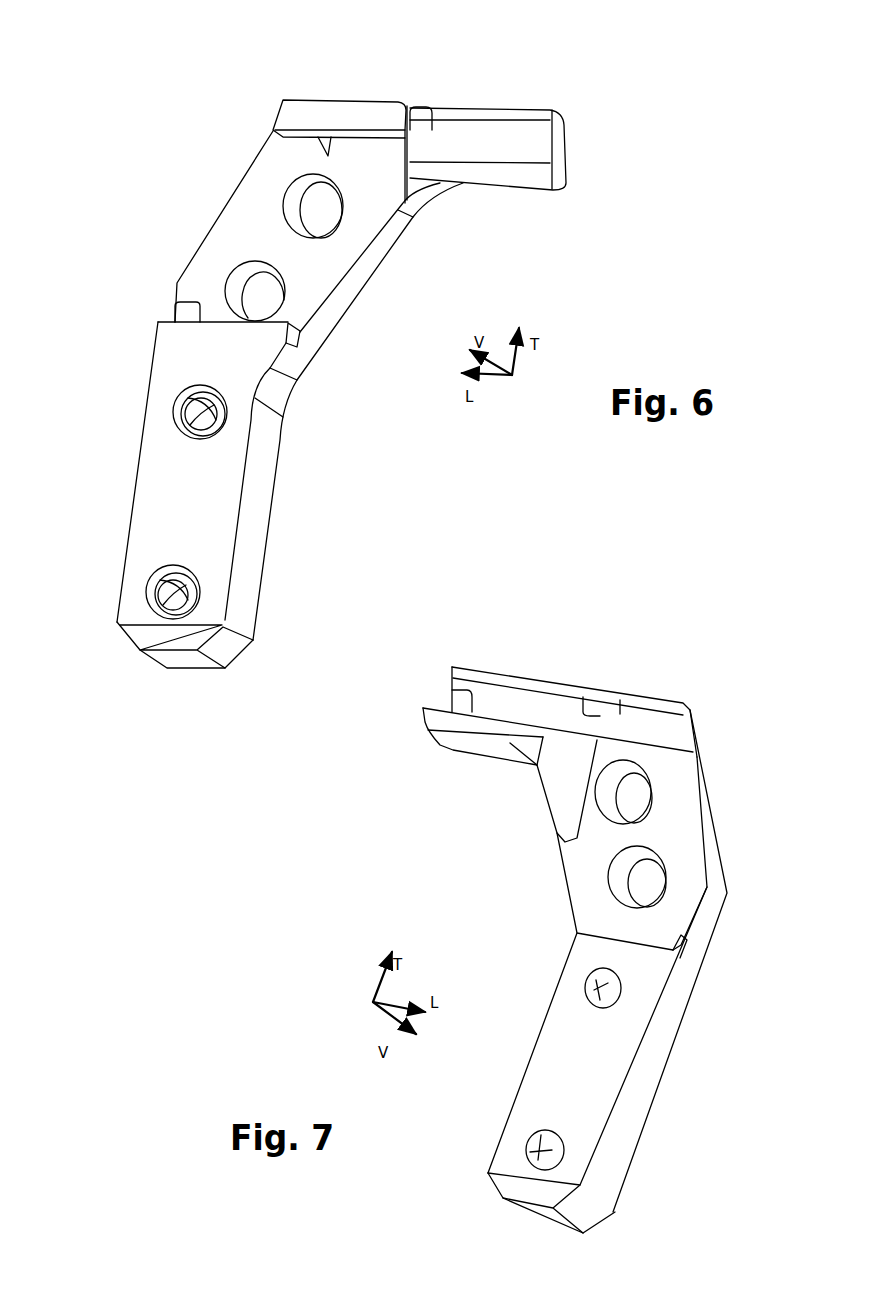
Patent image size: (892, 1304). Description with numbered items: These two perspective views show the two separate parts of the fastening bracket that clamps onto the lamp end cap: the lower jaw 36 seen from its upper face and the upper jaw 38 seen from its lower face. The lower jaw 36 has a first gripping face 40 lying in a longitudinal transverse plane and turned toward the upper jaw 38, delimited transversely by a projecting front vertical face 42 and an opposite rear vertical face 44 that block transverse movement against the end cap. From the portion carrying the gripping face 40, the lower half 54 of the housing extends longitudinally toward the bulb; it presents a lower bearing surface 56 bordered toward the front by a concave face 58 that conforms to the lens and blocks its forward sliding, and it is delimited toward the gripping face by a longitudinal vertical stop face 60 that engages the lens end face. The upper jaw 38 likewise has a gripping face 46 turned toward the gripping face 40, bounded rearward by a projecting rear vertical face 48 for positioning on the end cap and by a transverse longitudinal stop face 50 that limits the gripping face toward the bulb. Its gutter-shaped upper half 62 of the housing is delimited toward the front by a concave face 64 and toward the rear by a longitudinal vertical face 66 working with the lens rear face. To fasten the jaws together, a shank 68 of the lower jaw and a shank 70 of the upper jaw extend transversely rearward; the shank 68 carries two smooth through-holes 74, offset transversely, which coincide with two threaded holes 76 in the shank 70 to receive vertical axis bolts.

In FIG. 6, the lower jaw 36 is at (351, 346).
In FIG. 7, the upper jaw 38 is at (499, 844).
In FIG. 6, the first gripping face 40 is at (233, 235).
In FIG. 6, the front vertical face 42 is at (329, 153).
In FIG. 6, the rear vertical face 44 is at (177, 303).
In FIG. 7, the gripping face 46 is at (683, 832).
In FIG. 7, the rear vertical face 48 is at (678, 940).
In FIG. 7, the longitudinal stop face 50 is at (580, 823).
In FIG. 6, the lower half of the housing 54 is at (491, 146).
In FIG. 6, the lower bearing surface 56 is at (513, 173).
In FIG. 6, the concave face 58 is at (530, 138).
In FIG. 6, the longitudinal vertical stop face 60 is at (430, 127).
In FIG. 7, the upper half of the housing 62 is at (535, 708).
In FIG. 7, the concave face 64 is at (603, 713).
In FIG. 7, the longitudinal vertical face 66 is at (453, 690).
In FIG. 6, the shank 68 is at (170, 480).
In FIG. 7, the shank 70 is at (653, 1050).
In FIG. 6, the smooth through-holes 74 is at (195, 418).
In FIG. 7, the threaded holes 76 is at (603, 988).